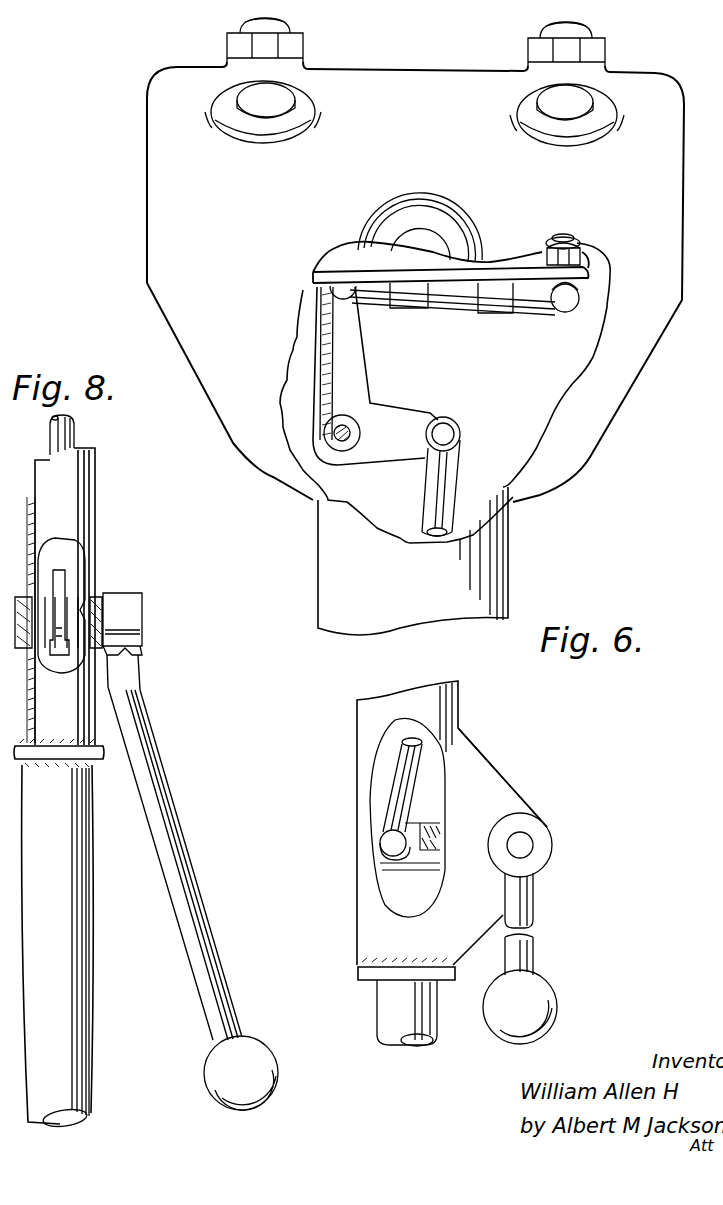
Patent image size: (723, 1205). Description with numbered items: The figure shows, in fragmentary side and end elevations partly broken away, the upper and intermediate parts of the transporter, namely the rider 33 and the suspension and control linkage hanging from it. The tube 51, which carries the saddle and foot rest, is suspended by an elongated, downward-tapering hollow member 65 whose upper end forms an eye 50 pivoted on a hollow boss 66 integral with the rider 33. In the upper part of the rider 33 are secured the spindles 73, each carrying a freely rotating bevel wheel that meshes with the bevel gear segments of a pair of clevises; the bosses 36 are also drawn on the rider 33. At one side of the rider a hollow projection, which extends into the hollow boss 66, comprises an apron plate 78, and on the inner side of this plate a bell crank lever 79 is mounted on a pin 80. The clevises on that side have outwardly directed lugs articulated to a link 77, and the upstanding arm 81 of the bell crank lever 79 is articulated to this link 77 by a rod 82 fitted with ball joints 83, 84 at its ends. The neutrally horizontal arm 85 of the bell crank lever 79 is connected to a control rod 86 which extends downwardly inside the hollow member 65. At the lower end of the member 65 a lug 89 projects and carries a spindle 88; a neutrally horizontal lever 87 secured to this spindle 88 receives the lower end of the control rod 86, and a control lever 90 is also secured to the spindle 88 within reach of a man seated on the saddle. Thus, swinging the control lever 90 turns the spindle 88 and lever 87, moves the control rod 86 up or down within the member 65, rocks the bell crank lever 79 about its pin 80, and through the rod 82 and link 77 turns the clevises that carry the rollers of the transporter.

In FIG. 6, the rider 33 is at (395, 146).
In FIG. 6, the spindle 73 is at (290, 20).
In FIG. 6, the boss 36 is at (560, 100).
In FIG. 6, the eye 50 is at (423, 205).
In FIG. 6, the hollow boss 66 is at (445, 230).
In FIG. 6, the link 77 is at (550, 256).
In FIG. 6, the rod 82 is at (462, 292).
In FIG. 6, the ball joint 83 is at (345, 293).
In FIG. 6, the ball joint 84 is at (565, 302).
In FIG. 6, the bell crank lever 79 is at (373, 405).
In FIG. 6, the upstanding arm 81 is at (352, 352).
In FIG. 6, the pin 80 is at (356, 437).
In FIG. 6, the neutrally horizontal arm 85 is at (418, 424).
In FIG. 6, the control rod 86 is at (452, 473).
In FIG. 8, the control rod 86 is at (72, 433).
In FIG. 6, the apron plate 78 is at (593, 424).
In FIG. 6, the hollow member 65 is at (444, 580).
In FIG. 8, the hollow member 65 is at (82, 476).
In FIG. 6, the neutrally horizontal lever 87 is at (432, 845).
In FIG. 8, the neutrally horizontal lever 87 is at (62, 572).
In FIG. 6, the lug 89 is at (492, 790).
In FIG. 6, the spindle 88 is at (520, 838).
In FIG. 6, the control lever 90 is at (535, 968).
In FIG. 8, the control lever 90 is at (140, 710).
In FIG. 6, the tube 51 is at (388, 1018).
In FIG. 8, the tube 51 is at (60, 1028).